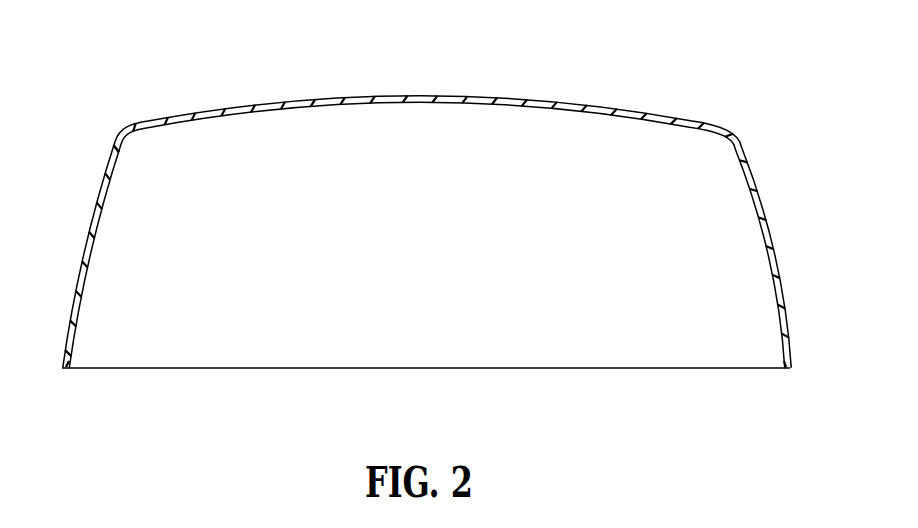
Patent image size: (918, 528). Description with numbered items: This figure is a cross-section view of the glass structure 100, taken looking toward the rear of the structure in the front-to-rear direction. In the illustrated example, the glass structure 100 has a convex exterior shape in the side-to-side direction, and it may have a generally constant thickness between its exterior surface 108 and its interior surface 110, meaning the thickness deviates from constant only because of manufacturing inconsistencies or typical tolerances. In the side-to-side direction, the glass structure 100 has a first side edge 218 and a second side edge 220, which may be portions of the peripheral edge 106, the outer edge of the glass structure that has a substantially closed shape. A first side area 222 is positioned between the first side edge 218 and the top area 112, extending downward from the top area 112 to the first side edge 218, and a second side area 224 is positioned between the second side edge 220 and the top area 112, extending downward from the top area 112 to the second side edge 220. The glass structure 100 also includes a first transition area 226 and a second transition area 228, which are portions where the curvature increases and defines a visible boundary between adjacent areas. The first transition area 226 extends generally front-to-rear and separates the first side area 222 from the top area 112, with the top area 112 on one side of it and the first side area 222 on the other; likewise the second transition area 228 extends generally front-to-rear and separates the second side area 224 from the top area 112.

The glass structure 100 is at (128, 54).
The peripheral edge 106 is at (720, 371).
The exterior surface 108 is at (612, 108).
The interior surface 110 is at (578, 113).
The top area 112 is at (414, 96).
The first side edge 218 is at (62, 368).
The second side edge 220 is at (792, 368).
The first side area 222 is at (88, 223).
The second side area 224 is at (770, 221).
The first transition area 226 is at (126, 129).
The second transition area 228 is at (729, 133).